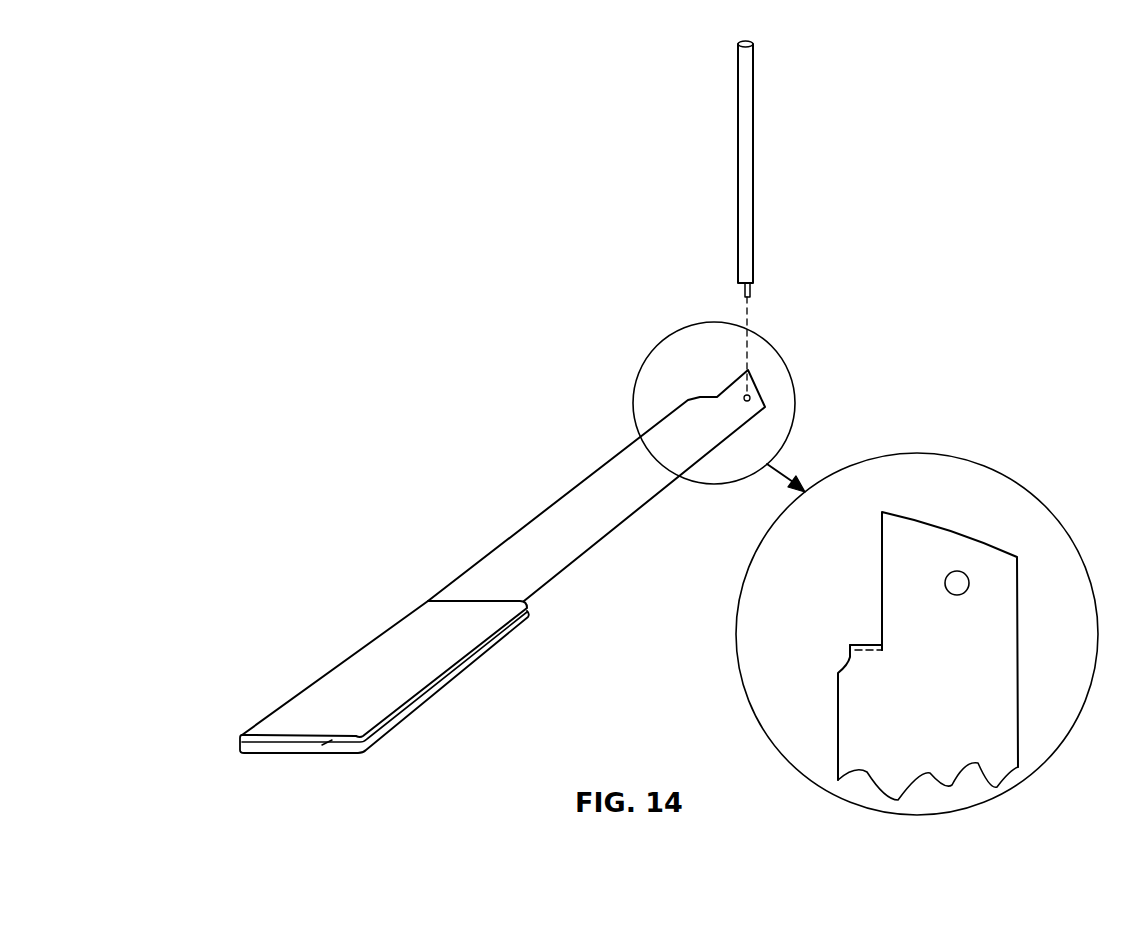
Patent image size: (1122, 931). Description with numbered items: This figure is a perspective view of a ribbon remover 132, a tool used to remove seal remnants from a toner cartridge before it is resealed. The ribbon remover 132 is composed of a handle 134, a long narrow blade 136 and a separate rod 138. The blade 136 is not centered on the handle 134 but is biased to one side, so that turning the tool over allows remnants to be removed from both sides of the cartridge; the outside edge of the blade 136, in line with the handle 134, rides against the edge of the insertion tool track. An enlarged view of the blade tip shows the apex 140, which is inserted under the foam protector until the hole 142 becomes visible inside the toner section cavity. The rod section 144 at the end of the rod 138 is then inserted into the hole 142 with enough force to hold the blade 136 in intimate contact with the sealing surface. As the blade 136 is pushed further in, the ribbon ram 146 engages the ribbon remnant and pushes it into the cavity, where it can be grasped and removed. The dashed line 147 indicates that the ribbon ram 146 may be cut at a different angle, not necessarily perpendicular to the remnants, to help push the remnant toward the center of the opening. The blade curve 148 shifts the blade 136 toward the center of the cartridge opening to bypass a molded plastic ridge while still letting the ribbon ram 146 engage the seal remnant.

The ribbon remover 132 is at (383, 613).
The handle 134 is at (322, 677).
The blade 136 is at (575, 482).
The rod 138 is at (762, 173).
The apex 140 is at (885, 510).
The hole 142 is at (957, 595).
The rod section 144 is at (752, 293).
The ribbon ram 146 is at (865, 643).
The dashed line 147 is at (877, 653).
The blade curve 148 is at (845, 667).